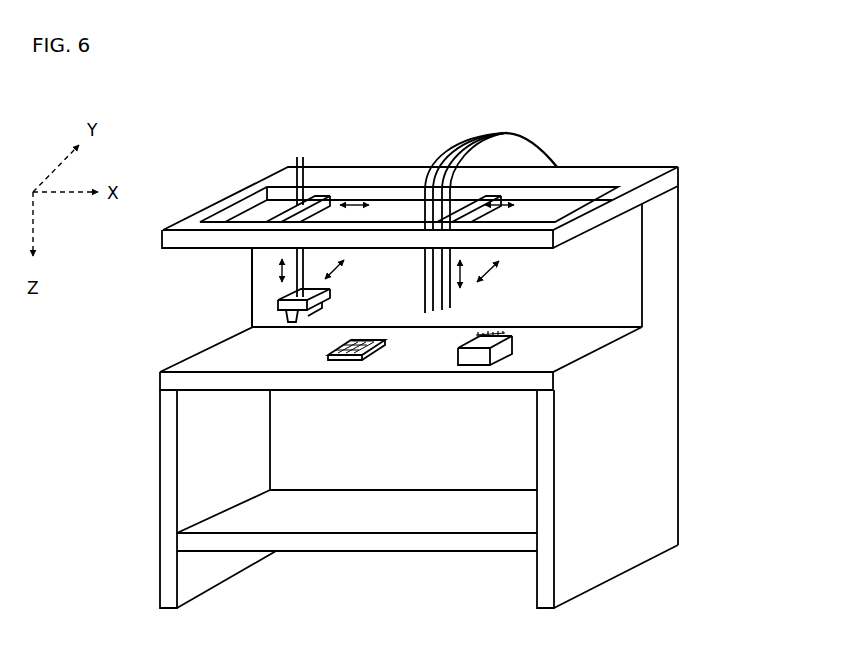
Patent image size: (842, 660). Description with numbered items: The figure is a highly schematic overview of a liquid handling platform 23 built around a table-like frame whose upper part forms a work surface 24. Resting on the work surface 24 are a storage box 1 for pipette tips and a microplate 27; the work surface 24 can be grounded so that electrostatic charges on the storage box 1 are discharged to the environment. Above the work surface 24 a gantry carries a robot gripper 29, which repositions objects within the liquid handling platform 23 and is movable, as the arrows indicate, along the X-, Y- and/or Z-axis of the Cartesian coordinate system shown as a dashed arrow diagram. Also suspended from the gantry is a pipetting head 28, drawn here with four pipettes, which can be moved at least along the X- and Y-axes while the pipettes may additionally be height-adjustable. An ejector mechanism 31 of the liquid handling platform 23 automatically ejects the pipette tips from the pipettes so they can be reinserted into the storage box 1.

The storage box 1 is at (517, 327).
The liquid handling platform 23 is at (738, 89).
The work surface 24 is at (576, 357).
The microplate 27 is at (370, 330).
The pipetting head 28 is at (438, 147).
The robot gripper 29 is at (268, 296).
The ejector mechanism 31 is at (491, 223).